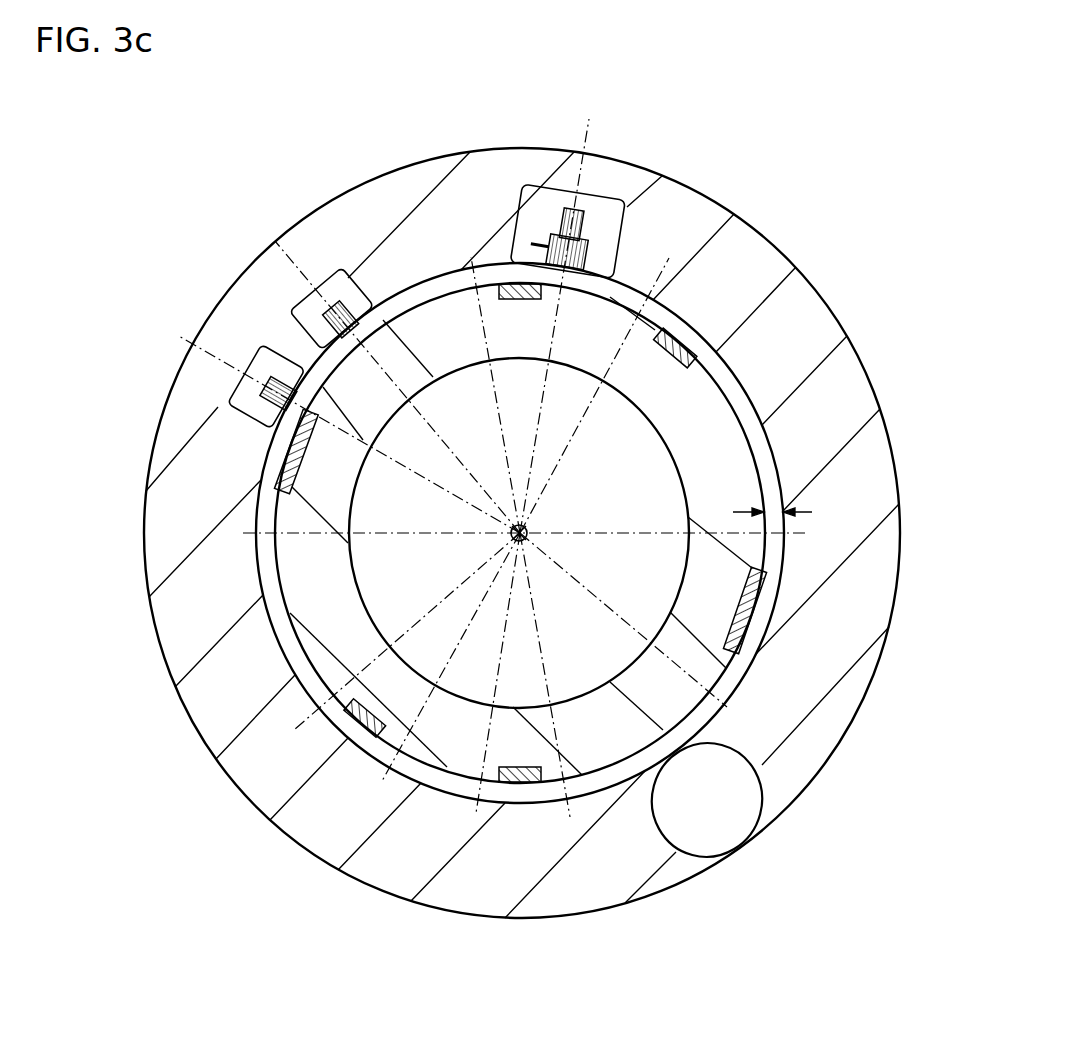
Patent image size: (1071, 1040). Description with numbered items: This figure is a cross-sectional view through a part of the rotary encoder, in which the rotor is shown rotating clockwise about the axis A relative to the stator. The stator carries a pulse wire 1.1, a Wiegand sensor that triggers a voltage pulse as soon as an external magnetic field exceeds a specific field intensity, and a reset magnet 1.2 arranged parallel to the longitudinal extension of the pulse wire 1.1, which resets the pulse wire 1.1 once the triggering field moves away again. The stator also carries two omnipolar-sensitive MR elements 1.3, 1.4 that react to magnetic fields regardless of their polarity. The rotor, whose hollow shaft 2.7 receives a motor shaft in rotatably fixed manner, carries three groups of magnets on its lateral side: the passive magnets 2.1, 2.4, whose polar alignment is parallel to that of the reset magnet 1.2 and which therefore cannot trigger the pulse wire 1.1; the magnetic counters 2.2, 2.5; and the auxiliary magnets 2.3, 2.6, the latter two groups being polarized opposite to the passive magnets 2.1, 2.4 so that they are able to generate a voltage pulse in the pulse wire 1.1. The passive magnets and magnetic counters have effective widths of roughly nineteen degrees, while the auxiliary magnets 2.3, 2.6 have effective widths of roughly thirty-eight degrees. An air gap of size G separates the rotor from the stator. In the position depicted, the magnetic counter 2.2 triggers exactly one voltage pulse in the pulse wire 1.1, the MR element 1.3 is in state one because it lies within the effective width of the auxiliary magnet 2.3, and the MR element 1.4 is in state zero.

The pulse wire 1.1 is at (600, 250).
The reset magnet 1.2 is at (578, 212).
The MR element 1.3 is at (270, 398).
The MR element 1.4 is at (322, 313).
The passive magnet 2.1 is at (693, 340).
The magnetic counter 2.2 is at (484, 335).
The auxiliary magnet 2.3 is at (304, 436).
The passive magnet 2.4 is at (353, 700).
The magnetic counter 2.5 is at (533, 782).
The auxiliary magnet 2.6 is at (738, 609).
The hollow shaft 2.7 is at (607, 710).
The axis A is at (524, 537).
The air gap G is at (768, 513).